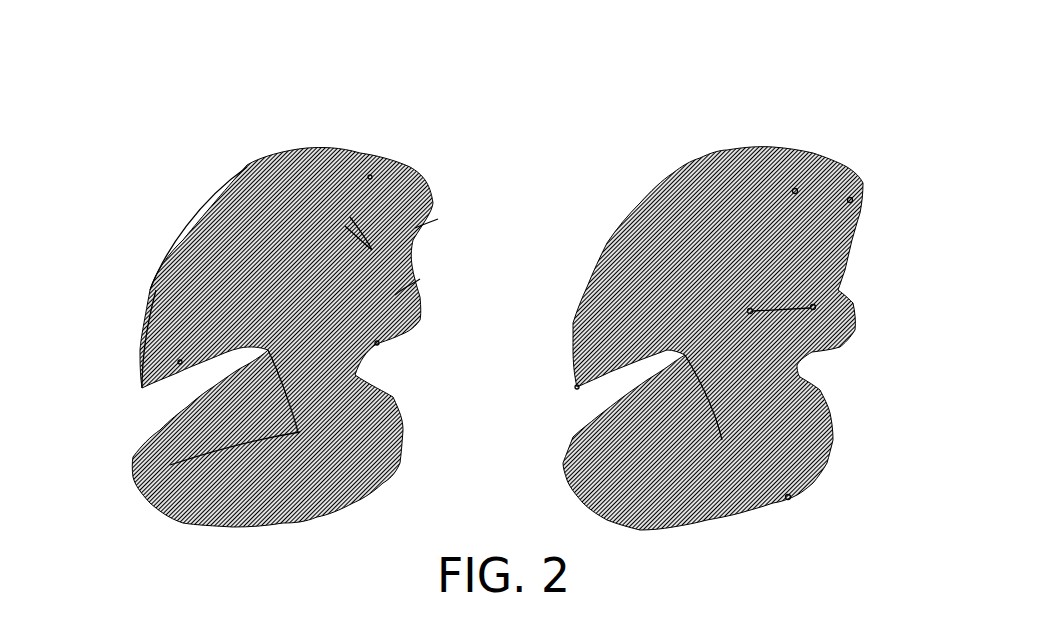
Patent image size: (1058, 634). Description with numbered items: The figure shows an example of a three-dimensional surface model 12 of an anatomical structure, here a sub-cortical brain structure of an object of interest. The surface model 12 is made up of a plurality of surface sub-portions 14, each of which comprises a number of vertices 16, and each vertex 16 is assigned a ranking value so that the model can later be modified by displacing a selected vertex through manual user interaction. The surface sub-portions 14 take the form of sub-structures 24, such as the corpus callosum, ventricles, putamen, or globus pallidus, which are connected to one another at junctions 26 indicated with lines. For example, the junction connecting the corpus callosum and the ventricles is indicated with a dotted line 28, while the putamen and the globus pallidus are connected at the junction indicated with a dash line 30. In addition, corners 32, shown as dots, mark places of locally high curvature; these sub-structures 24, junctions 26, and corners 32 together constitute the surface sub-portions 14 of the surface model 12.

The 3D surface model 12 is at (436, 151).
The surface sub-portions 14 is at (273, 147).
The vertices 16 is at (370, 177).
The sub-structures 24 is at (172, 460).
The junctions 26 is at (438, 219).
The dotted line 28 is at (350, 217).
The dash line 30 is at (420, 279).
The corners 32 is at (816, 307).